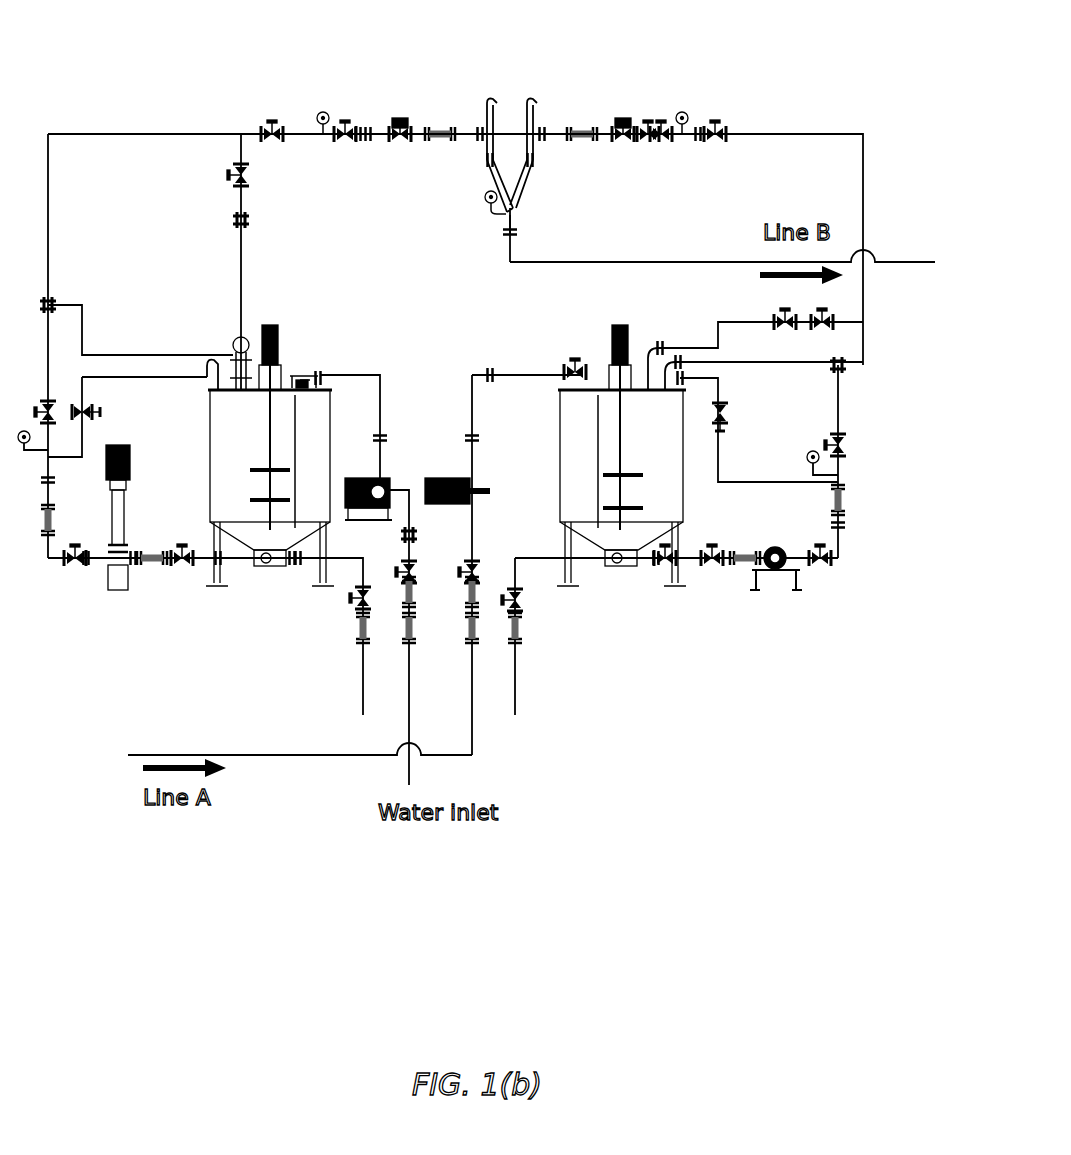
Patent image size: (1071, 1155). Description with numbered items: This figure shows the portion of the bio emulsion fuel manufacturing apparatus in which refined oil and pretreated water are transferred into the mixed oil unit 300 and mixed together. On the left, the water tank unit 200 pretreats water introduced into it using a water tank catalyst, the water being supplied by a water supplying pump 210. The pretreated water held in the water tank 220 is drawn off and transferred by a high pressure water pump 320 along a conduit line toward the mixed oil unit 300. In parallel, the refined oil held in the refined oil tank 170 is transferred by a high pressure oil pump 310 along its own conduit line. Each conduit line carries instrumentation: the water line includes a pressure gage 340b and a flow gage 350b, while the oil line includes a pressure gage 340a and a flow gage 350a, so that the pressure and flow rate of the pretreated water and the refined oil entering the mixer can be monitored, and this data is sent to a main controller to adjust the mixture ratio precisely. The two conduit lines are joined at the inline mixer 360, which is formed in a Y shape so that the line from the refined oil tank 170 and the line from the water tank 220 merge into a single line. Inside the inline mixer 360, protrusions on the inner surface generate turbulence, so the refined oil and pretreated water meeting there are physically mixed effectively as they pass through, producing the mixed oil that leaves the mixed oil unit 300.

The mixed oil unit 300 is at (586, 80).
The flow gage 350b is at (400, 125).
The pressure gage 340b is at (336, 142).
The flow gage 350a is at (623, 125).
The pressure gage 340a is at (668, 142).
The inline mixer 360 is at (522, 182).
The water tank unit 200 is at (203, 326).
The water tank 220 is at (316, 373).
The water supplying pump 210 is at (397, 478).
The refined oil tank 170 is at (614, 385).
The high pressure water pump 320 is at (118, 592).
The high pressure oil pump 310 is at (785, 575).